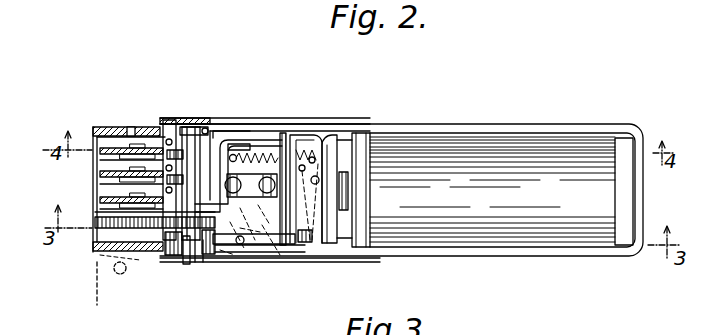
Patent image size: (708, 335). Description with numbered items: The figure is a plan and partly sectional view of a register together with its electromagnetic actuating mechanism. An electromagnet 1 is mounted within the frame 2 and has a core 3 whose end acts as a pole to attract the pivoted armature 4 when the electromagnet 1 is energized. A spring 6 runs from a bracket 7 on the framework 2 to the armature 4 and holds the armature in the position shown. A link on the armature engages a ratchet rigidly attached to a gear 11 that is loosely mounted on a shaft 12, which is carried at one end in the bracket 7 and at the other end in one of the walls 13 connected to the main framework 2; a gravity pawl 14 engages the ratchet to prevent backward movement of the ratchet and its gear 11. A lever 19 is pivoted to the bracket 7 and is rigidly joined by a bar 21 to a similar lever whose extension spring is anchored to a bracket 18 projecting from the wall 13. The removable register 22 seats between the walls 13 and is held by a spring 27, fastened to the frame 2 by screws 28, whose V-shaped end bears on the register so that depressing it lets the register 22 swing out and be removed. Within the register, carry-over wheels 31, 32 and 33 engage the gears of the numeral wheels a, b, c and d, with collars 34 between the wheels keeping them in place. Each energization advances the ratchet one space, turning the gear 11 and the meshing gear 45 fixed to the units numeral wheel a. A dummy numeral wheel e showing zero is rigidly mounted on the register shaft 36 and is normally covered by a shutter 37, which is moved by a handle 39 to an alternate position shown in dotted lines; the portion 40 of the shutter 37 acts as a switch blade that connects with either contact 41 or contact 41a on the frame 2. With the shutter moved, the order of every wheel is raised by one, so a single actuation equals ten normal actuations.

The electromagnet 1 is at (530, 150).
The frame 2 is at (472, 126).
The core 3 is at (358, 182).
The armature 4 is at (334, 136).
The spring 6 is at (265, 156).
The bracket 7 is at (230, 130).
The gear 11 is at (202, 262).
The shaft 12 is at (187, 264).
The walls 13 is at (248, 128).
The gravity pawl 14 is at (230, 246).
The bracket 18 is at (219, 138).
The lever 19 is at (174, 256).
The bar 21 is at (200, 168).
The removable register 22 is at (107, 127).
The spring 27 is at (208, 126).
The screws 28 is at (251, 196).
The carry-over wheel 31 is at (135, 222).
The carry-over wheel 32 is at (165, 185).
The carry-over wheel 33 is at (128, 127).
The collars 34 is at (169, 122).
The shaft 36 is at (112, 246).
The shutter 37 is at (94, 240).
The handle 39 is at (97, 305).
The switch blade portion 40 is at (288, 262).
The contact 41 is at (318, 196).
The contact 41a is at (316, 190).
The gear 45 is at (97, 250).
The numeral wheel a is at (97, 234).
The numeral wheel b is at (100, 187).
The numeral wheel c is at (100, 166).
The numeral wheel d is at (97, 139).
The dummy numeral wheel e is at (100, 256).